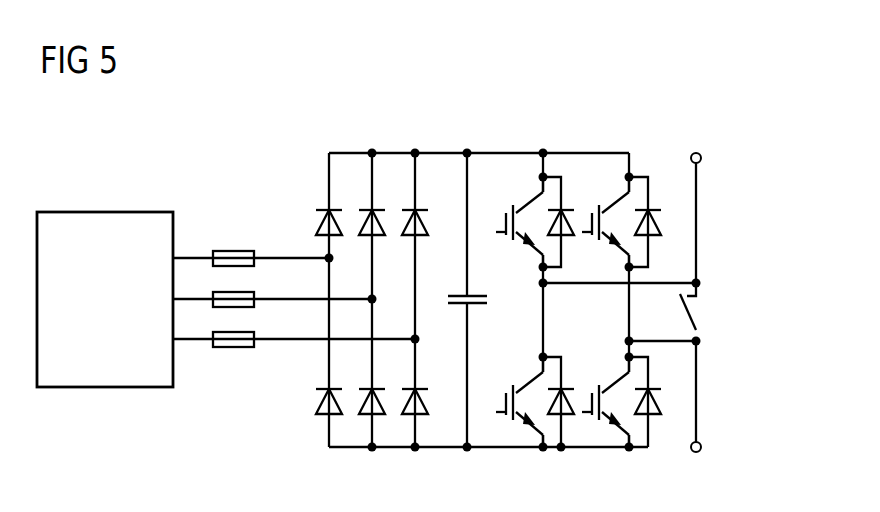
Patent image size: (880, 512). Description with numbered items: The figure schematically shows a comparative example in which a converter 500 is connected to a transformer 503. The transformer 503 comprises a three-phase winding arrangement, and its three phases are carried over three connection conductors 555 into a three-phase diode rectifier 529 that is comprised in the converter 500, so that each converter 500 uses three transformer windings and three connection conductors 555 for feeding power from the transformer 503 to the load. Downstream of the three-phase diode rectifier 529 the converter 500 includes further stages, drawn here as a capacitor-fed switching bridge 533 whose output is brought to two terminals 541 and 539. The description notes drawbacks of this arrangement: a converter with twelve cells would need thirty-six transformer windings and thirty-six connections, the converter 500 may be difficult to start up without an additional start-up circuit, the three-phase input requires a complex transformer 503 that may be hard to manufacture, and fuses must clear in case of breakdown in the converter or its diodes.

The converter 500 is at (490, 110).
The transformer 503 is at (104, 212).
The connection conductors 555 is at (273, 339).
The three-phase diode rectifier 529 is at (420, 137).
The inverter 533 is at (653, 137).
The output terminal 541 is at (701, 158).
The output terminal 539 is at (701, 447).